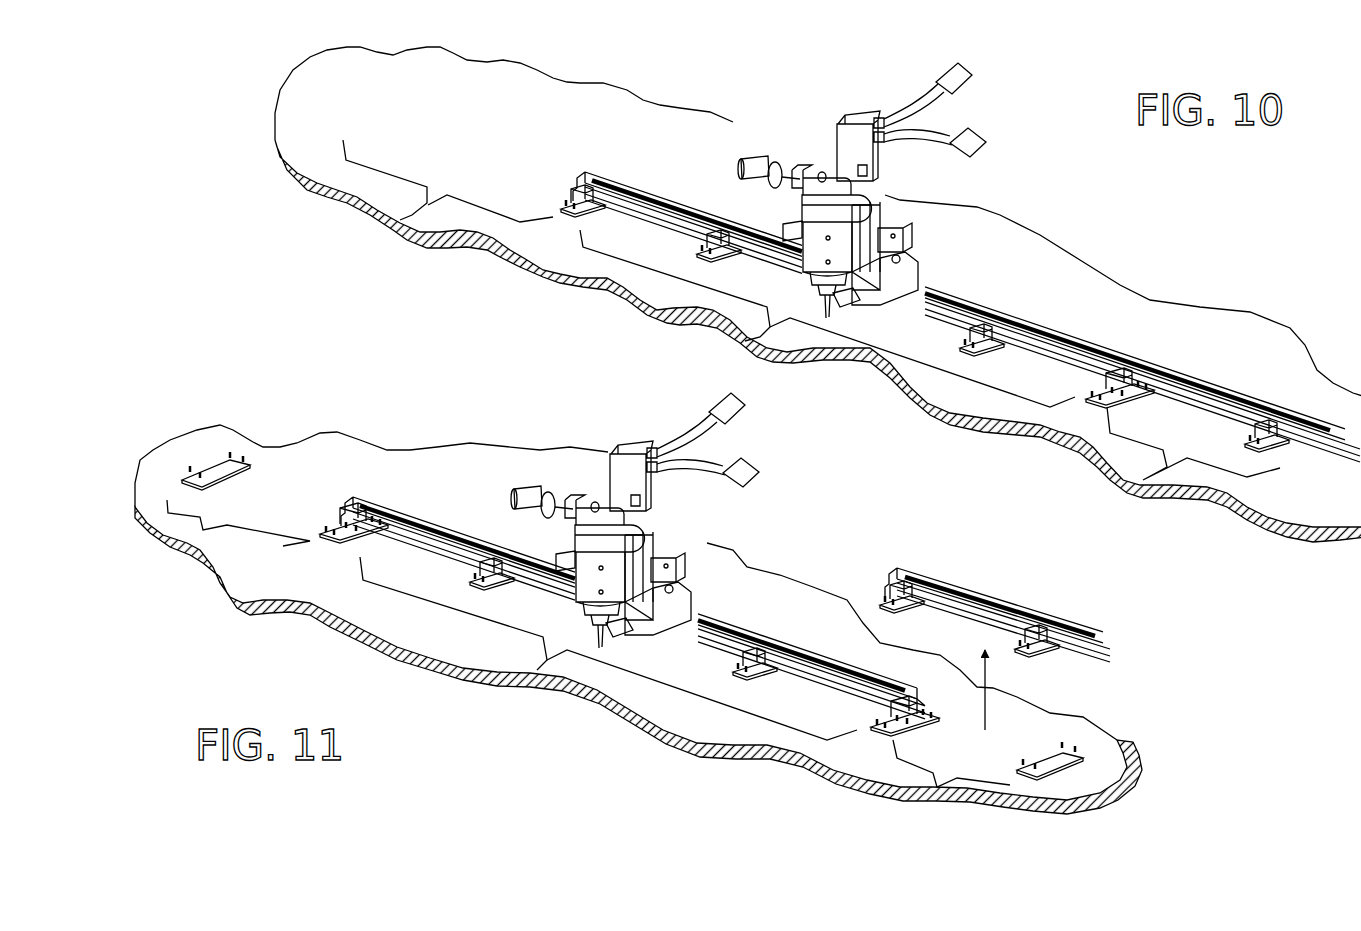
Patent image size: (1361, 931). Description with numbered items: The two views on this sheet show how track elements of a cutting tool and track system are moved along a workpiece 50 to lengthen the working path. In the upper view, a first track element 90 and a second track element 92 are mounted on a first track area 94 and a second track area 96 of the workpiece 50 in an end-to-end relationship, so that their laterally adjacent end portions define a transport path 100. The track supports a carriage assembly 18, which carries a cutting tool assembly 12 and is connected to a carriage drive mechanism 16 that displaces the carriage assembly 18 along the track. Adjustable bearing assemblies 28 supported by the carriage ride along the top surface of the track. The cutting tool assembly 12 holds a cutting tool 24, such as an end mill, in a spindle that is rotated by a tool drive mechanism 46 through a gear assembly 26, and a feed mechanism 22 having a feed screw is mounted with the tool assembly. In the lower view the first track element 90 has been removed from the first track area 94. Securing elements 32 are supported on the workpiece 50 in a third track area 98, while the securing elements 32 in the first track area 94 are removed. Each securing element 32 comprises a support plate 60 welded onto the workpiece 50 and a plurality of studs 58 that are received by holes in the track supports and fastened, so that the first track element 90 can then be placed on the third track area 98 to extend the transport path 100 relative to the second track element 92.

In FIG. 10, the cutting tool assembly 12 is at (820, 252).
In FIG. 11, the cutting tool assembly 12 is at (543, 602).
In FIG. 10, the carriage drive mechanism 16 is at (793, 230).
In FIG. 11, the carriage drive mechanism 16 is at (498, 511).
In FIG. 10, the carriage assembly 18 is at (920, 268).
In FIG. 11, the carriage assembly 18 is at (741, 588).
In FIG. 10, the feed mechanism 22 is at (757, 156).
In FIG. 11, the feed mechanism 22 is at (500, 427).
In FIG. 10, the cutting tool 24 is at (820, 308).
In FIG. 11, the cutting tool 24 is at (645, 661).
In FIG. 10, the gear assembly 26 is at (882, 187).
In FIG. 11, the gear assembly 26 is at (713, 501).
In FIG. 10, the adjustable bearing assemblies 28 is at (913, 247).
In FIG. 11, the adjustable bearing assemblies 28 is at (738, 544).
In FIG. 11, the securing elements 32 is at (234, 425).
In FIG. 10, the tool drive mechanism 46 is at (836, 150).
In FIG. 11, the tool drive mechanism 46 is at (581, 415).
In FIG. 10, the workpiece 50 is at (1061, 284).
In FIG. 11, the workpiece 50 is at (825, 709).
In FIG. 11, the studs 58 is at (215, 425).
In FIG. 11, the support plate 60 is at (200, 463).
In FIG. 10, the first track element 90 is at (1240, 380).
In FIG. 11, the first track element 90 is at (967, 573).
In FIG. 10, the second track element 92 is at (1080, 332).
In FIG. 11, the second track element 92 is at (810, 640).
In FIG. 10, the first track area 94 is at (1120, 483).
In FIG. 11, the first track area 94 is at (900, 803).
In FIG. 10, the second track area 96 is at (737, 326).
In FIG. 11, the second track area 96 is at (505, 684).
In FIG. 10, the third track area 98 is at (383, 223).
In FIG. 11, the third track area 98 is at (190, 543).
In FIG. 10, the transport path 100 is at (960, 261).
In FIG. 11, the transport path 100 is at (715, 550).